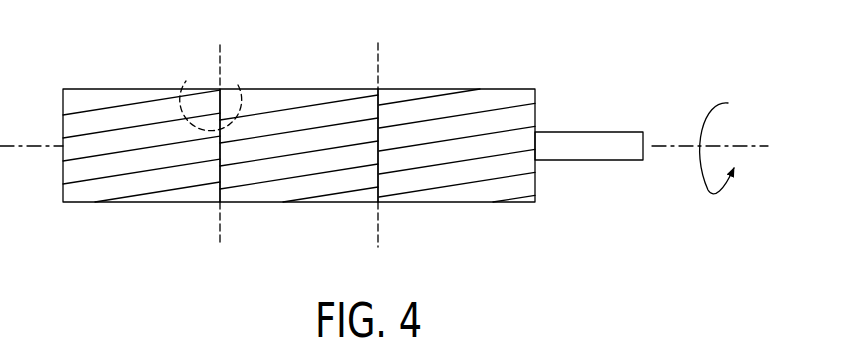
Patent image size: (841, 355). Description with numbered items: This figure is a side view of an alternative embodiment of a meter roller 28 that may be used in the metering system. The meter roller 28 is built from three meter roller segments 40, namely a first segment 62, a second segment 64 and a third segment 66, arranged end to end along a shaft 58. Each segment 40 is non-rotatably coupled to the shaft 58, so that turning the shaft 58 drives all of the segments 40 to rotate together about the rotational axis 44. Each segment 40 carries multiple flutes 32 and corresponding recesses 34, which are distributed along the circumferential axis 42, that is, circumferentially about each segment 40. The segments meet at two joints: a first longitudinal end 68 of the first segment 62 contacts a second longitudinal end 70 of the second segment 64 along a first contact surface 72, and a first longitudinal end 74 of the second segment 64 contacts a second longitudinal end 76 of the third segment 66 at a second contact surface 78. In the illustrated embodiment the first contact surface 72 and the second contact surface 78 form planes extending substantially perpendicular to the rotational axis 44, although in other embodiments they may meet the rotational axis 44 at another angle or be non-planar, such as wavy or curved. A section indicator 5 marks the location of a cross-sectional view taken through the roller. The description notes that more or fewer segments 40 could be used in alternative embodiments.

The section line 5- 5 is at (178, 82).
The meter roller 28 is at (368, 40).
The flutes 32 is at (116, 107).
The recesses 34 is at (147, 113).
The meter roller segments 40 is at (140, 202).
The circumferential axis 42 is at (712, 197).
The rotational axis 44 is at (677, 146).
The shaft 58 is at (590, 132).
The first segment 62 is at (84, 89).
The second segment 64 is at (240, 117).
The third segment 66 is at (510, 89).
The first longitudinal end 68 is at (220, 151).
The second longitudinal end 70 is at (222, 182).
The first contact surface 72 is at (220, 230).
The first longitudinal end 74 is at (378, 146).
The second longitudinal end 76 is at (380, 178).
The second contact surface 78 is at (378, 227).